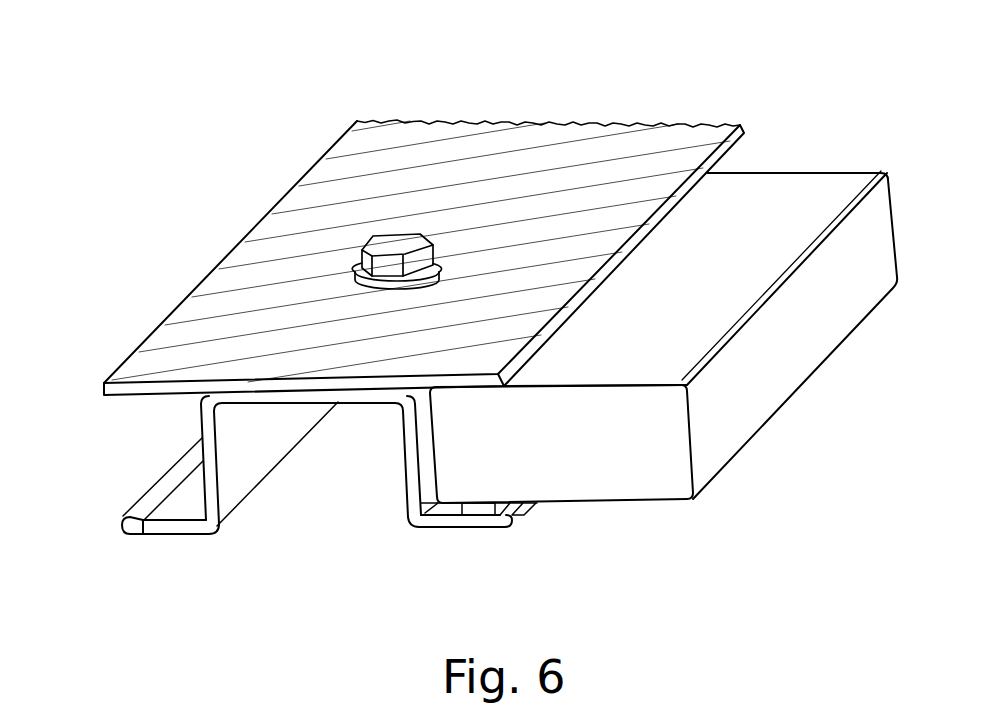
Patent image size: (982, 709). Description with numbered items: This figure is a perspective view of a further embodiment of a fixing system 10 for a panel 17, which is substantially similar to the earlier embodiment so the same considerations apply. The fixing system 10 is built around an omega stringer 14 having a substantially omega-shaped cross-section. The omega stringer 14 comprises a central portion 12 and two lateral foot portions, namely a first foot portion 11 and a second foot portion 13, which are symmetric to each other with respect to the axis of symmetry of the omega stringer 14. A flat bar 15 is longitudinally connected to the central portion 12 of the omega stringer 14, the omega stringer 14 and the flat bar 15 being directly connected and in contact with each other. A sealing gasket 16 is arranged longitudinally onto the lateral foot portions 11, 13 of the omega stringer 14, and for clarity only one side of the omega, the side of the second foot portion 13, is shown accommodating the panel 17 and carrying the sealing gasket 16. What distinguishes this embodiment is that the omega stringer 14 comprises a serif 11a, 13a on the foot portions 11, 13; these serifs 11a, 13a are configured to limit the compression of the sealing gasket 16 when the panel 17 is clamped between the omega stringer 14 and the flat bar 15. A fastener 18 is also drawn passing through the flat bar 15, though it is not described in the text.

The fixing system 10 is at (266, 87).
The first foot portion 11 is at (177, 490).
The serif 11a is at (132, 530).
The central portion 12 is at (285, 402).
The second foot portion 13 is at (437, 527).
The serif 13a is at (518, 514).
The omega stringer 14 is at (112, 422).
The flat bar 15 is at (367, 160).
The sealing gasket 16 is at (475, 508).
The panel 17 is at (585, 482).
The fastening bolt 18 is at (395, 243).